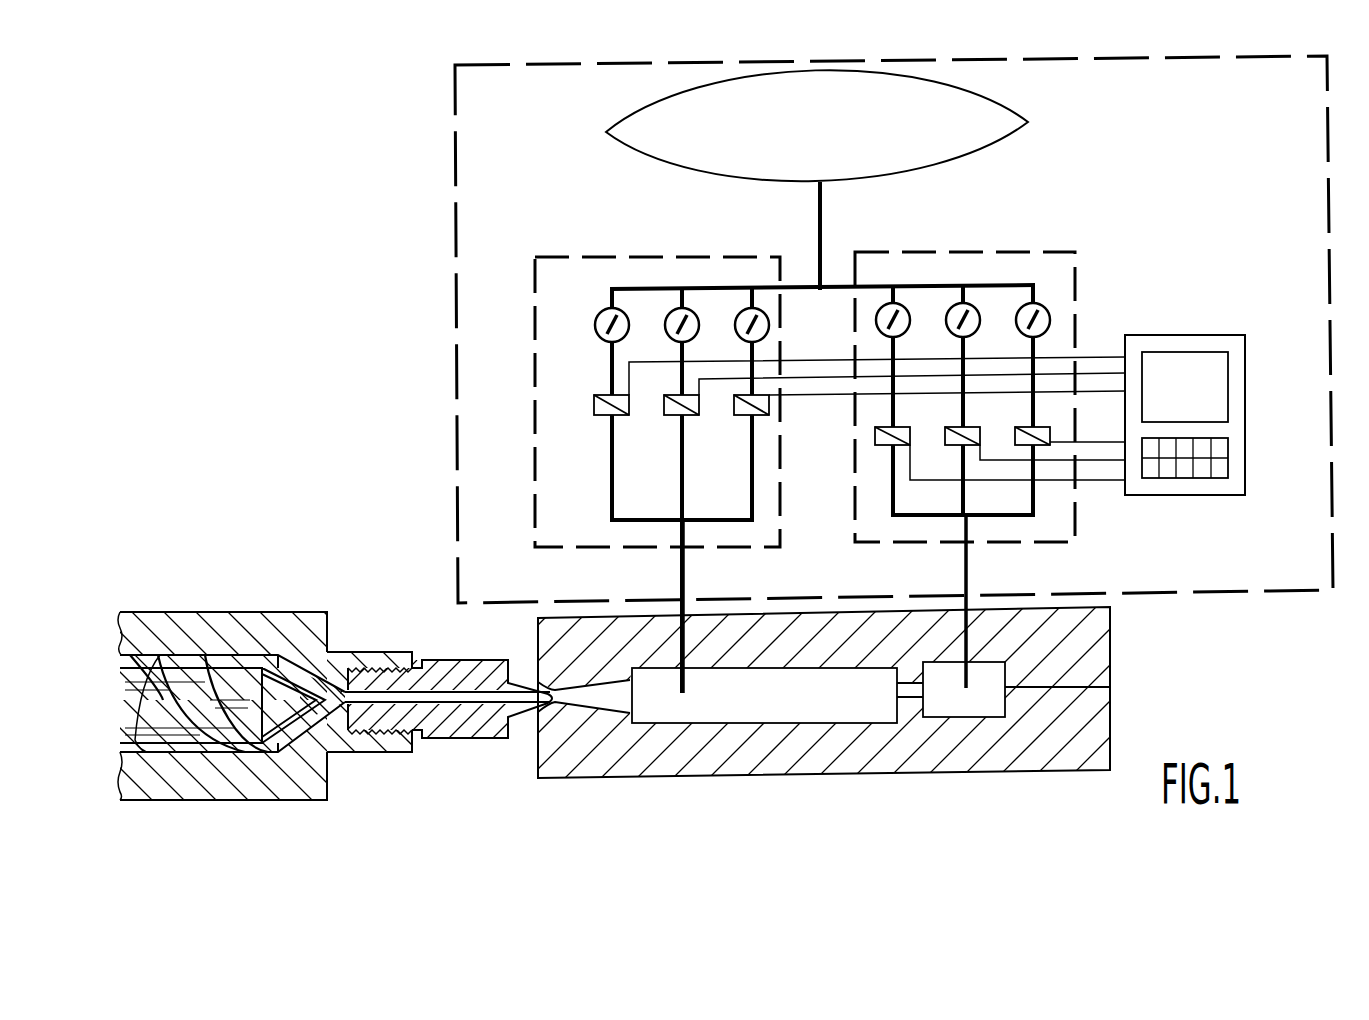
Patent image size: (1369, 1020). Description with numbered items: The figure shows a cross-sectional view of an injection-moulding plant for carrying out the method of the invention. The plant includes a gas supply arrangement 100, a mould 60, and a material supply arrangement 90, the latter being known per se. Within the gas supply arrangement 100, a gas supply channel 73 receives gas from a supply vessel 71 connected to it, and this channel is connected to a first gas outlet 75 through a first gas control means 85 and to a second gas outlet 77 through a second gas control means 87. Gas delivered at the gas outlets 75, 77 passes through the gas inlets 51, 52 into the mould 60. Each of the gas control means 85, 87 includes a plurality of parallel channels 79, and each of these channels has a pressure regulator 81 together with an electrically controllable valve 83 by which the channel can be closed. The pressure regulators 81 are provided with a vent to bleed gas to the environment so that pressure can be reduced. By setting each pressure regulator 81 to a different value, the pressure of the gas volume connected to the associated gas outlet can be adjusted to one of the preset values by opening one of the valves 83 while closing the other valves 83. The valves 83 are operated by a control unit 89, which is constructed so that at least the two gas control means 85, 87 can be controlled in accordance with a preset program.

The gas supply arrangement 100 is at (445, 391).
The supply vessel 71 is at (1010, 104).
The gas supply channel 73 is at (822, 236).
The first gas control means 85 is at (600, 262).
The second gas control means 87 is at (1020, 258).
The pressure regulator 81 is at (596, 334).
The electrically controllable valve 83 is at (593, 410).
The parallel channels 79 is at (610, 478).
The control unit 89 is at (1245, 396).
The first gas outlet 75 is at (686, 572).
The second gas outlet 77 is at (969, 567).
The gas inlet 51 is at (688, 688).
The gas inlet 52 is at (965, 683).
The mould 60 is at (812, 710).
The material supply arrangement 90 is at (237, 596).